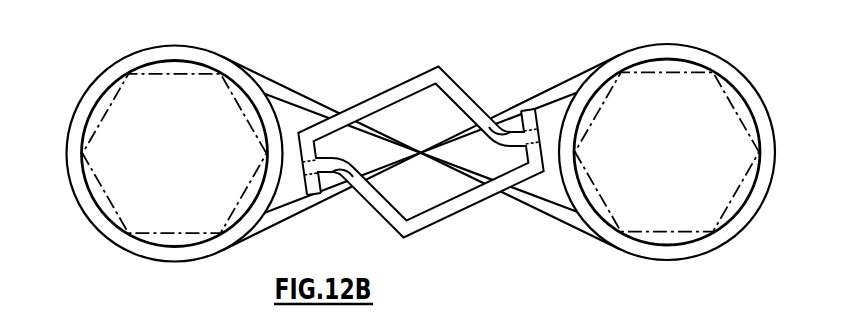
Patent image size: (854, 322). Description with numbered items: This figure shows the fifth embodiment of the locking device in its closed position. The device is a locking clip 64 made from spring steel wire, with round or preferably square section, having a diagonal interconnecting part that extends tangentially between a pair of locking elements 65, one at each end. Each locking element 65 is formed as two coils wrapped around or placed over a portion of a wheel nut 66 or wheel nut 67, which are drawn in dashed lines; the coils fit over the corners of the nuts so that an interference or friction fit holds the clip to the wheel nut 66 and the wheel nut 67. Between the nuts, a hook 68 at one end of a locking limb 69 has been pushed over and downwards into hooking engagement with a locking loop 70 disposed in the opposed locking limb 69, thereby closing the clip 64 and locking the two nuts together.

The locking clip 64 is at (290, 90).
The locking elements 65 is at (90, 98).
The wheel nut 66 is at (147, 139).
The wheel nut 67 is at (672, 145).
The hook 68 is at (530, 101).
The locking limb 69 is at (410, 79).
The locking loop 70 is at (509, 130).